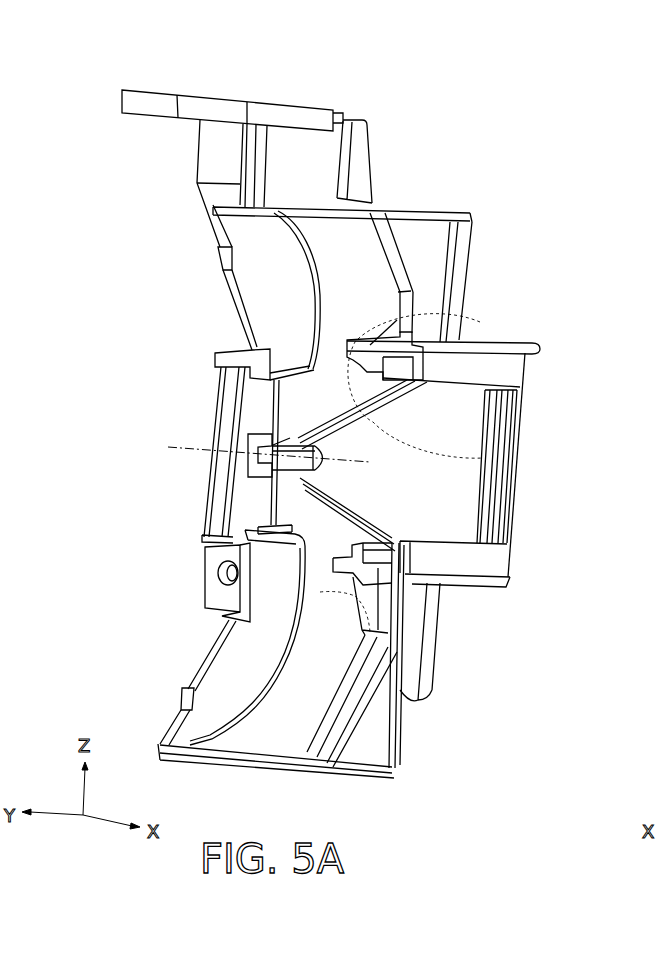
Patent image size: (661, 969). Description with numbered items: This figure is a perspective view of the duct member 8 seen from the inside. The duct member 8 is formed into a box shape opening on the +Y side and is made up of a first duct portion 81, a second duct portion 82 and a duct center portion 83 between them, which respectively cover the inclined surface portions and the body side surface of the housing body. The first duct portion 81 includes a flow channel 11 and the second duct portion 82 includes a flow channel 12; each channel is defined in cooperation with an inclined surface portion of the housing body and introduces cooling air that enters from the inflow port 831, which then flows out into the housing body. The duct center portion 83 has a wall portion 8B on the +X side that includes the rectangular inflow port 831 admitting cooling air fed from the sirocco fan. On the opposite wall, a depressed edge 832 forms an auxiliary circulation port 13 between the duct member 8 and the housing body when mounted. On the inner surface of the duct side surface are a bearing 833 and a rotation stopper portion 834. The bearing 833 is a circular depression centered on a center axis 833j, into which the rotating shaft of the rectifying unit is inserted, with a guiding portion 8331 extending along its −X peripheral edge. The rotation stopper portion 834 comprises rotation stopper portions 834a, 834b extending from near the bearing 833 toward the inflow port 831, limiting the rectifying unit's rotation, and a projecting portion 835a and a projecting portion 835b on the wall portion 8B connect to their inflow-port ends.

The duct member 8 is at (480, 120).
The flow channel 11 is at (328, 258).
The flow channel 12 is at (288, 675).
The auxiliary circulation port 13 is at (191, 455).
The first duct portion 81 is at (442, 249).
The second duct portion 82 is at (356, 752).
The duct center portion 83 is at (523, 367).
The inflow port 831 is at (478, 390).
The edge 832 is at (222, 376).
The bearing 833 is at (330, 466).
The guiding portion 8331 is at (257, 477).
The center axis 833j is at (190, 448).
The rotation stopper portion 834 is at (479, 465).
The rotation stopper portion 834a is at (364, 406).
The rotation stopper portion 834b is at (355, 518).
The projecting portion 835a is at (468, 319).
The projecting portion 835b is at (355, 594).
The wall portion 8B is at (500, 470).